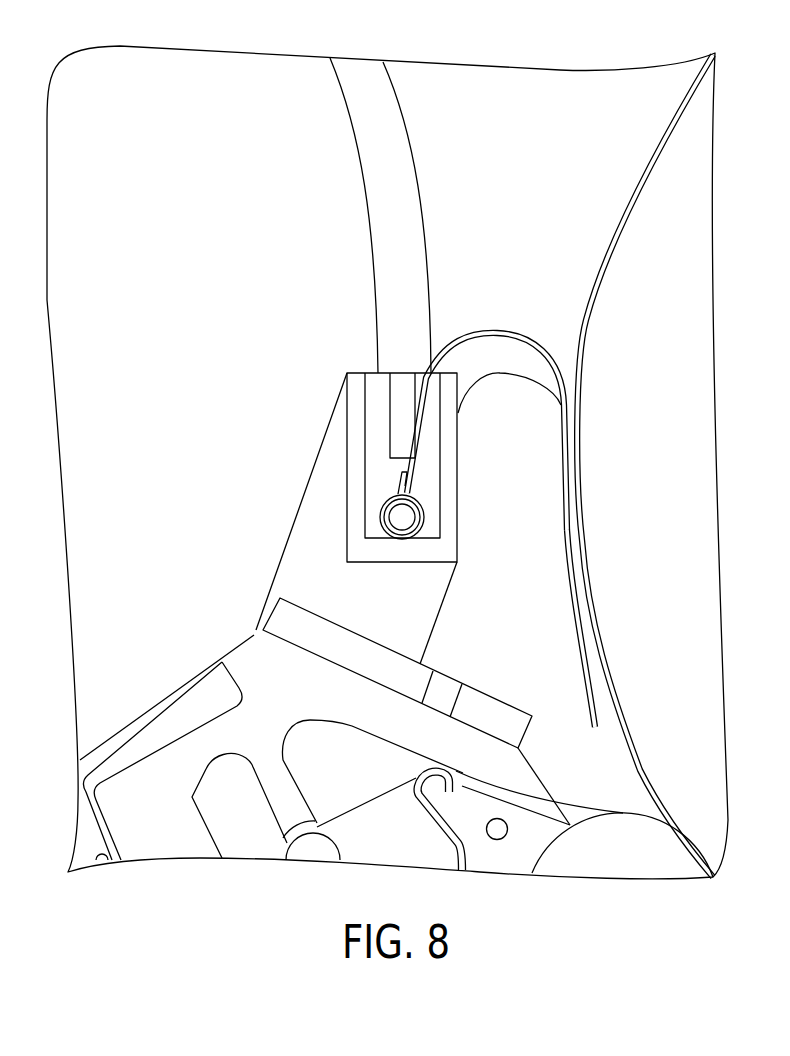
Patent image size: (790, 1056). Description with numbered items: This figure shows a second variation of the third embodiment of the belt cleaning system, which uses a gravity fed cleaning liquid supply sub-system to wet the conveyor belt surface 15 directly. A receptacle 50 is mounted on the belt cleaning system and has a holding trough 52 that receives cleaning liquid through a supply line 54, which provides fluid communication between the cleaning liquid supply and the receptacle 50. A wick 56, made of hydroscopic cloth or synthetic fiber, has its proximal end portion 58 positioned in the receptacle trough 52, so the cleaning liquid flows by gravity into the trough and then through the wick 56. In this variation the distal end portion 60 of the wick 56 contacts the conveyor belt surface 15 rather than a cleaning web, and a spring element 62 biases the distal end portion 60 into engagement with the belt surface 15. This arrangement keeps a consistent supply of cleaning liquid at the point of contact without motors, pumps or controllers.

The conveyor belt surface 15 is at (604, 216).
The receptacle 50 is at (325, 468).
The holding trough 52 is at (377, 388).
The supply line 54 is at (400, 180).
The wick 56 is at (493, 332).
The proximal end portion 58 is at (378, 513).
The distal end portion 60 is at (587, 678).
The spring element 62 is at (495, 373).